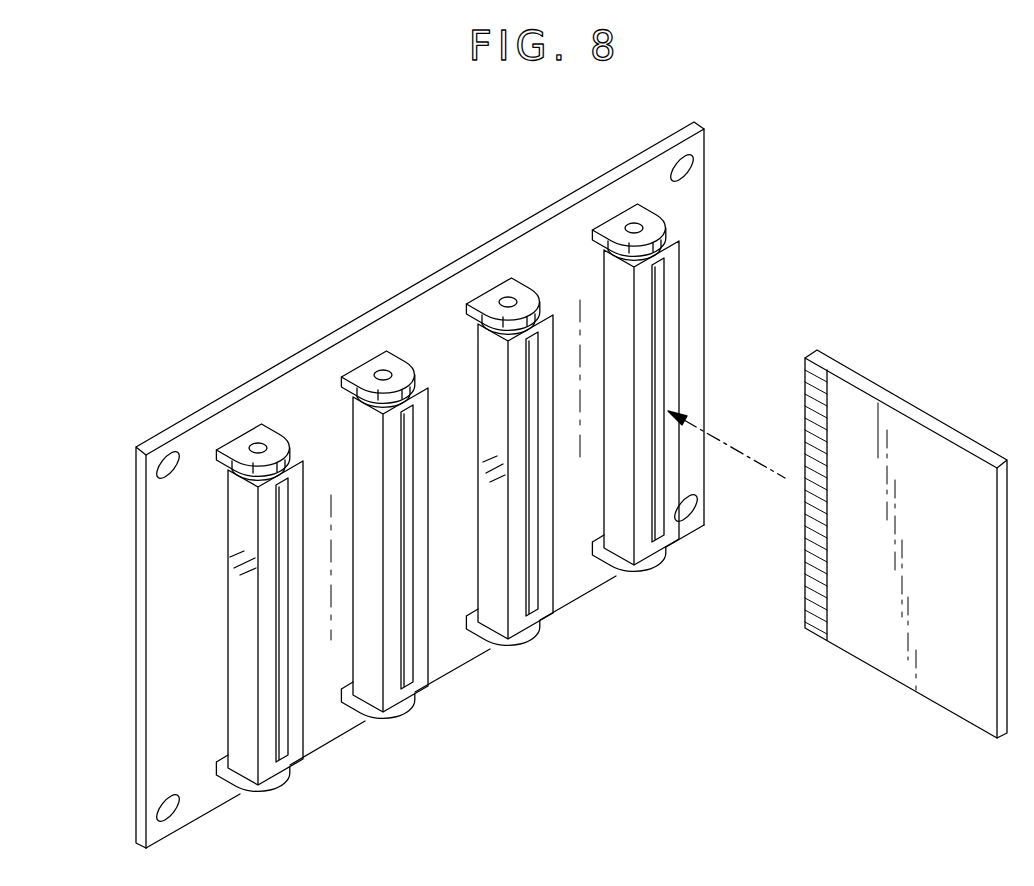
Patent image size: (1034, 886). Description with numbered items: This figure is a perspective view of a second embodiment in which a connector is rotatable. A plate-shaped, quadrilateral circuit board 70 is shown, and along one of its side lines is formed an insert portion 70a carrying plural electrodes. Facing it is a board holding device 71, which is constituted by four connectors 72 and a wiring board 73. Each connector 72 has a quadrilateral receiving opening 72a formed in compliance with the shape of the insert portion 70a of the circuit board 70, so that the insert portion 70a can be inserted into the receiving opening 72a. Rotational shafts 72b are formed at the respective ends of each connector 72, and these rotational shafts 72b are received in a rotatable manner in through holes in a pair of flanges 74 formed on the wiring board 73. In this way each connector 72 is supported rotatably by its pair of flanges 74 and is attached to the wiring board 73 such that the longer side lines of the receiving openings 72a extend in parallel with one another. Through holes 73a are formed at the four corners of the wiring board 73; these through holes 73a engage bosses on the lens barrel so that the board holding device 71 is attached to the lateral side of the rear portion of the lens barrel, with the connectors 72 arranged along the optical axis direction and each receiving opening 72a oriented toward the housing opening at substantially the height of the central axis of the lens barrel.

The circuit board 70 is at (883, 540).
The insert portion 70a is at (810, 588).
The board holding device 71 is at (420, 485).
The connector 72 is at (243, 591).
The receiving opening 72a is at (280, 718).
The rotational shaft 72b is at (255, 444).
The wiring board 73 is at (160, 573).
The through hole 73a is at (153, 466).
The flange 74 is at (237, 448).